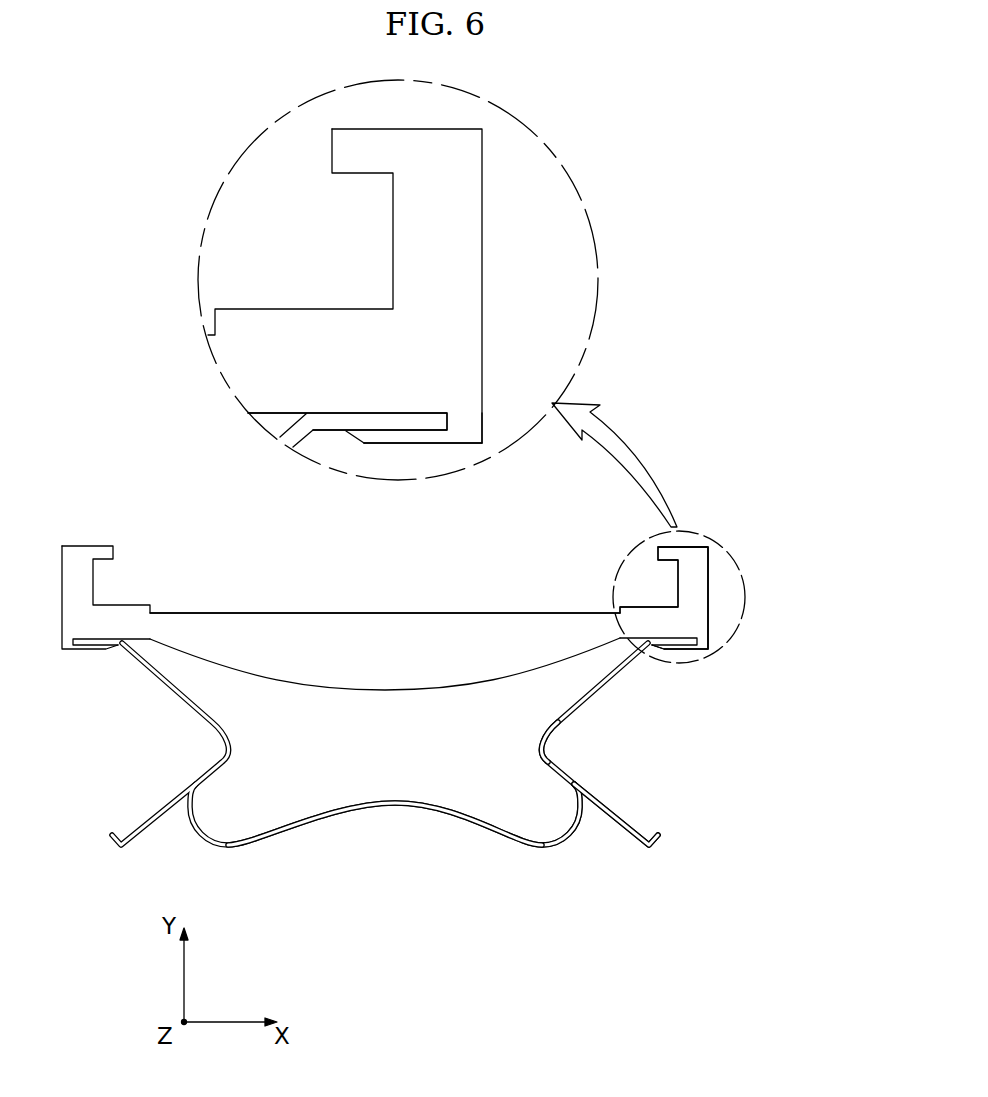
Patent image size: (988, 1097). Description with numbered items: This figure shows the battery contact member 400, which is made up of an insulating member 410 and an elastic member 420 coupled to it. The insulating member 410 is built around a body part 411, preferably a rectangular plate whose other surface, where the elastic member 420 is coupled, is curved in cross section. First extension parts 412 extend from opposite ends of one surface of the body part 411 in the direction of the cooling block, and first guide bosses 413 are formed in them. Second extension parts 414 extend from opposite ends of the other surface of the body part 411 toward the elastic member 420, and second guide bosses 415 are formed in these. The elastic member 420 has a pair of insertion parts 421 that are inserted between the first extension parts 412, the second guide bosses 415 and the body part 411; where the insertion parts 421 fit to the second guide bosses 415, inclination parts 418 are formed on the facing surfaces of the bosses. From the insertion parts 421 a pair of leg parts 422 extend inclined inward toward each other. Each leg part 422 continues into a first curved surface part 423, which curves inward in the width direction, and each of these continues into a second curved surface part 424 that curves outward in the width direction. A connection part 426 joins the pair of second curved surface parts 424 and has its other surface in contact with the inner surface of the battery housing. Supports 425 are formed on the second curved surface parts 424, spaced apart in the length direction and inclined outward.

The battery contact member 400 is at (90, 476).
The insulating member 410 is at (78, 660).
The body part 411 is at (318, 612).
The first extension parts 412 is at (347, 153).
The first guide bosses 413 is at (448, 248).
The second extension parts 414 is at (458, 421).
The second guide bosses 415 is at (422, 443).
The inclination parts 418 is at (353, 437).
The elastic member 420 is at (493, 858).
The insertion part 421 is at (386, 418).
The leg part 422 is at (281, 433).
The first curved surface part 423 is at (533, 740).
The second curved surface part 424 is at (592, 825).
The support 425 is at (627, 833).
The connection part 426 is at (368, 803).